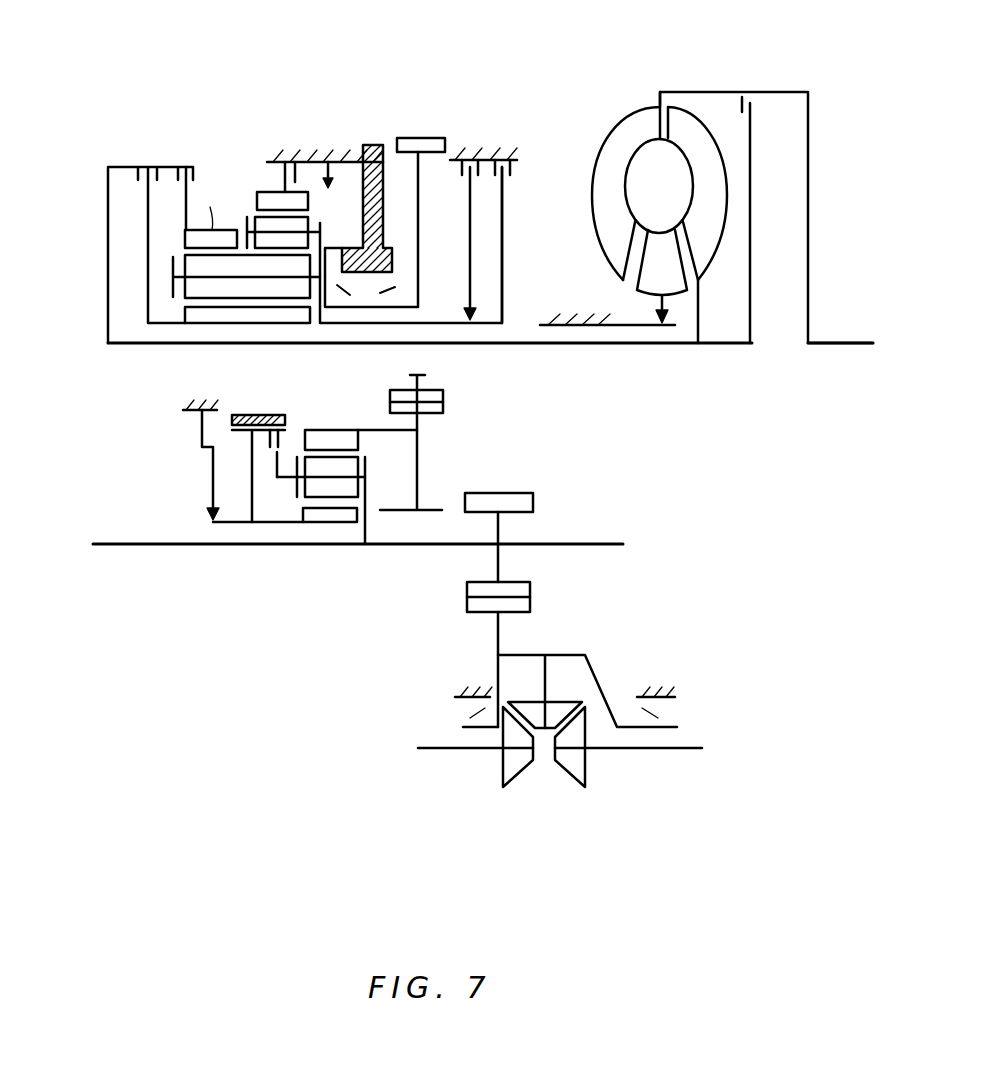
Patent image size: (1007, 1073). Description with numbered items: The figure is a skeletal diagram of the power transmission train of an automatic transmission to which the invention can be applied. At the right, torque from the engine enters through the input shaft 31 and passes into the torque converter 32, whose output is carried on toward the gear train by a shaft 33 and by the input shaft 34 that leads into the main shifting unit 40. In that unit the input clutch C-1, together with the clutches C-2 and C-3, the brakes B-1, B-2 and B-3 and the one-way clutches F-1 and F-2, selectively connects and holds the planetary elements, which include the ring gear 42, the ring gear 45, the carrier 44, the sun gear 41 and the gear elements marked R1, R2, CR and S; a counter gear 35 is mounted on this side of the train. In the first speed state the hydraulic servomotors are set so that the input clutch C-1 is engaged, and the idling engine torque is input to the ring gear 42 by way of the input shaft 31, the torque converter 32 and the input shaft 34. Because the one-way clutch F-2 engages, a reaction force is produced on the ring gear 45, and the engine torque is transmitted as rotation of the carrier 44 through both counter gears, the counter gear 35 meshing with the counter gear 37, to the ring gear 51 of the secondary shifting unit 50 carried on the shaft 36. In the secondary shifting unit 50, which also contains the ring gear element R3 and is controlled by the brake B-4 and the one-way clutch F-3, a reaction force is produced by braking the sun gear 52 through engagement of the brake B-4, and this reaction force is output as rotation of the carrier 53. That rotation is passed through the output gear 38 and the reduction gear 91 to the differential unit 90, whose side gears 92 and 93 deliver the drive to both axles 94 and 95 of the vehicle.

The first planetary gear unit 40 is at (305, 96).
The torque converter 32 is at (638, 98).
The input shaft 33 is at (760, 103).
The input shaft 31 is at (843, 343).
The counter drive gear 35 is at (420, 138).
The input shaft 34 is at (147, 347).
The sun gear 41 is at (240, 323).
The ring gear 42 is at (224, 201).
The carrier 44 is at (313, 290).
The ring gear 45 is at (308, 202).
The counter driven gear 37 is at (443, 403).
The output gear 38 is at (517, 493).
The second shaft 36 is at (218, 547).
The secondary shifting unit 50 is at (278, 592).
The ring gear 51 is at (358, 447).
The sun gear 52 is at (323, 526).
The carrier 53 is at (367, 488).
The final reduction gear 91 is at (460, 603).
The differential unit 90 is at (547, 782).
The left side gear 92 is at (512, 787).
The right side gear 93 is at (577, 787).
The axle 94 is at (453, 748).
The axle 95 is at (663, 753).
The input clutch C-1 is at (178, 166).
The second clutch C-2 is at (140, 166).
The third clutch C-3 is at (285, 442).
The first brake B-1 is at (512, 167).
The second brake B-2 is at (462, 167).
The third brake B-3 is at (270, 170).
The brake B-4 is at (253, 415).
The first one-way clutch F-1 is at (467, 307).
The one-way clutch F-2 is at (333, 175).
The third one-way clutch F-3 is at (205, 515).
The ring gear R1 is at (185, 236).
The ring gear R2 is at (267, 192).
The ring gear R3 is at (303, 442).
The carrier CR is at (205, 268).
The sun gear S is at (193, 315).